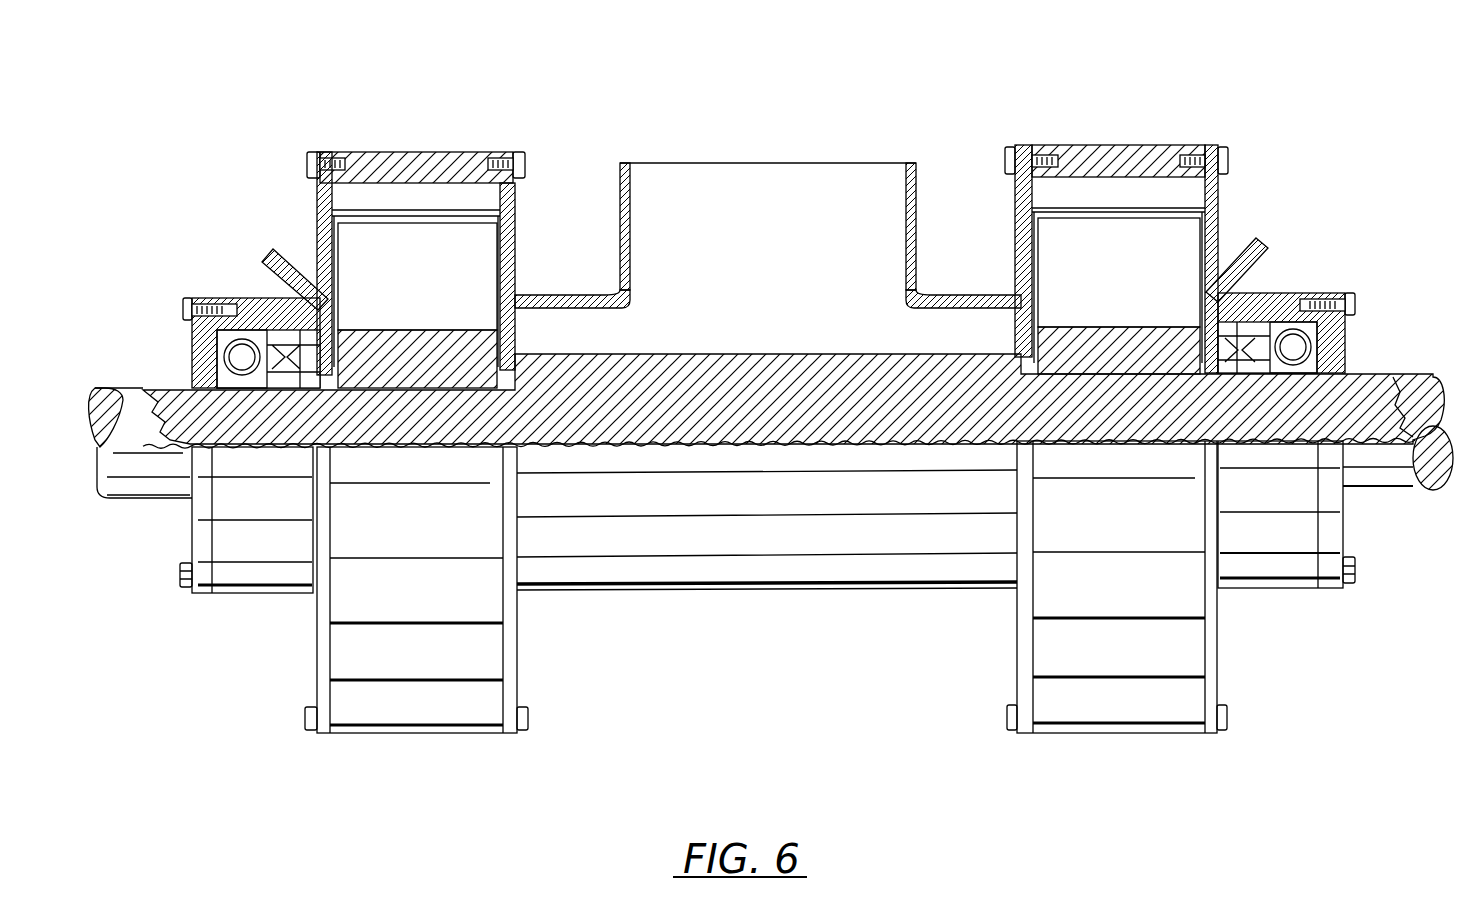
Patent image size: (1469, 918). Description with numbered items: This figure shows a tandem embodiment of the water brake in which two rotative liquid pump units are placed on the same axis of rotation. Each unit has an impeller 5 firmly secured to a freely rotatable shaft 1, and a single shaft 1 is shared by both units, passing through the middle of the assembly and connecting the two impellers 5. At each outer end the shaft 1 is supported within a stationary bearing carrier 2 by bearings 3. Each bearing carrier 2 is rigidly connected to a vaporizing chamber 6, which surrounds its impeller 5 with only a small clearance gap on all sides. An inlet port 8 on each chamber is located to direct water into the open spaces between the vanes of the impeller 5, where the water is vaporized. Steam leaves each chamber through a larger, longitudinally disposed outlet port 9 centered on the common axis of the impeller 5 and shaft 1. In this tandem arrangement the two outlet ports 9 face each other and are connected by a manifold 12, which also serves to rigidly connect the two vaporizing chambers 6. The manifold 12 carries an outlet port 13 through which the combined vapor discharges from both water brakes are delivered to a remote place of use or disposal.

The shaft 1 is at (1408, 488).
The bearing carrier 2 is at (257, 594).
The bearings 3 is at (210, 352).
The impeller 5 is at (457, 218).
The vaporizing chamber 6 is at (399, 148).
The inlet port 8 is at (280, 247).
The outlet port 9 is at (507, 337).
The manifold 12 is at (738, 590).
The outlet port 13 is at (773, 162).